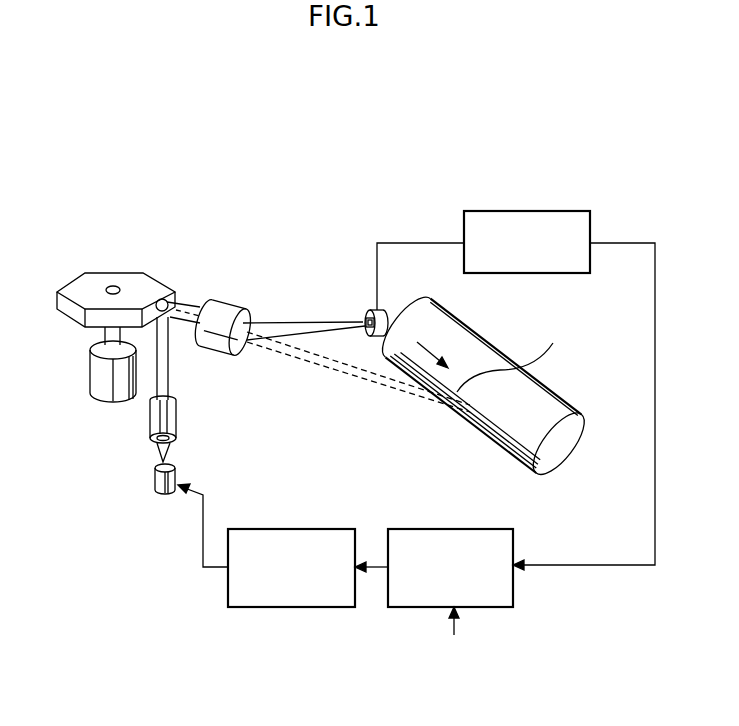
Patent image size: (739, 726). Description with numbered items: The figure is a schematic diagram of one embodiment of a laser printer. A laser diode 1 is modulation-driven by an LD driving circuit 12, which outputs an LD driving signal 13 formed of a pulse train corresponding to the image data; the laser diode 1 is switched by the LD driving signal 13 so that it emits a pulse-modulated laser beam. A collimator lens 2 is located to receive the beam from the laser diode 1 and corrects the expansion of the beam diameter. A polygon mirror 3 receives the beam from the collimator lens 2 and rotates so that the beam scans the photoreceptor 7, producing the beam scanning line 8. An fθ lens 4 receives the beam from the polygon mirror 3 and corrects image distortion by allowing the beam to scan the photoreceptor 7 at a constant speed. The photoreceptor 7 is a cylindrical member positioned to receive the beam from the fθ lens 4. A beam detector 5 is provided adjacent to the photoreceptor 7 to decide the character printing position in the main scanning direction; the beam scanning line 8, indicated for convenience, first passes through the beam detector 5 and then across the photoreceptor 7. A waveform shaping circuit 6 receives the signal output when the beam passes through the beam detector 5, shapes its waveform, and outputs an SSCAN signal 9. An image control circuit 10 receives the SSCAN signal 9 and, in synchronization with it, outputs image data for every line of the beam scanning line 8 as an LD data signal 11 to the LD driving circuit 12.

The laser diode 1 is at (152, 485).
The collimator lens 2 is at (150, 425).
The polygon mirror 3 is at (125, 285).
The fθ lens 4 is at (222, 313).
The beam detector 5 is at (368, 310).
The waveform shaping circuit 6 is at (575, 211).
The photoreceptor 7 is at (517, 364).
The beam scanning line 8 is at (508, 356).
The SSCAN signal 9 is at (632, 243).
The image control circuit 10 is at (440, 529).
The LD data signal 11 is at (370, 560).
The LD driving circuit 12 is at (256, 529).
The LD driving signal 13 is at (197, 537).